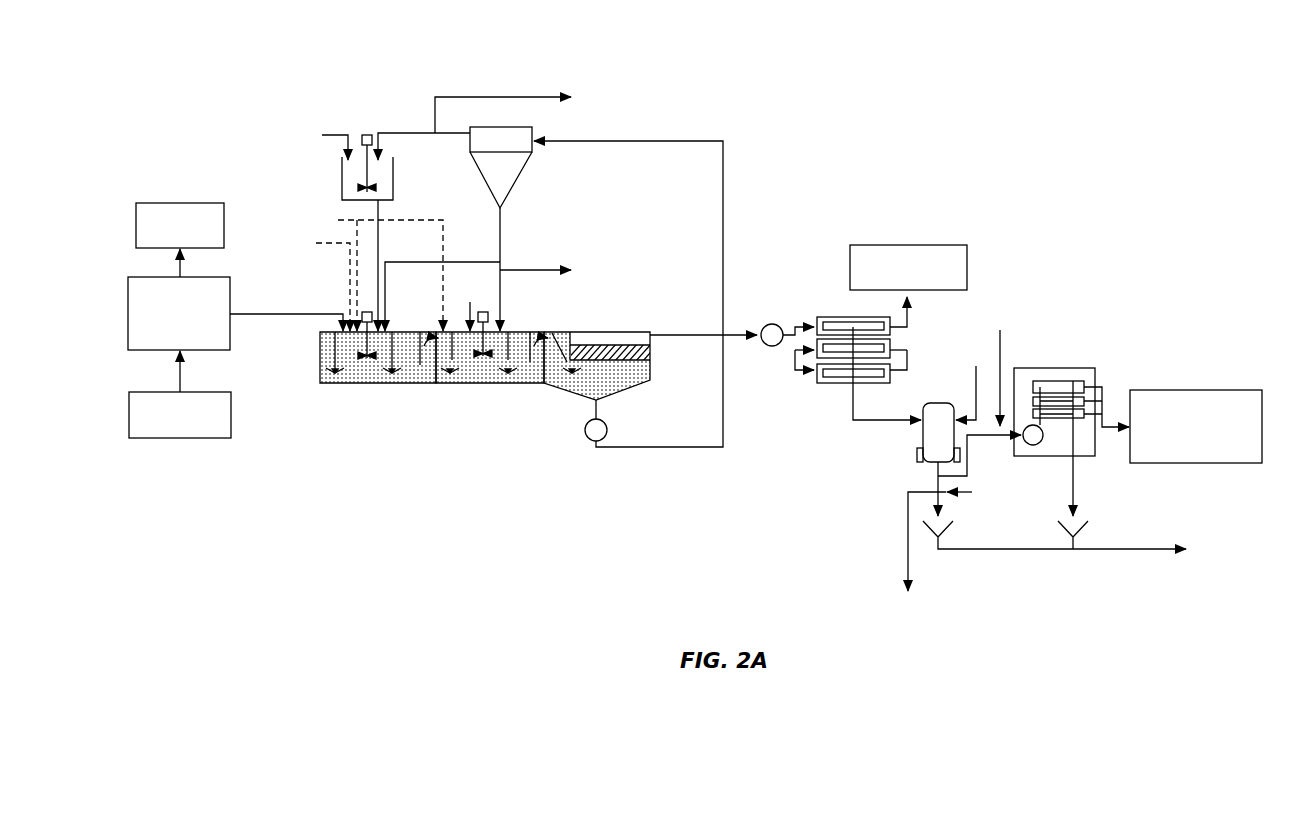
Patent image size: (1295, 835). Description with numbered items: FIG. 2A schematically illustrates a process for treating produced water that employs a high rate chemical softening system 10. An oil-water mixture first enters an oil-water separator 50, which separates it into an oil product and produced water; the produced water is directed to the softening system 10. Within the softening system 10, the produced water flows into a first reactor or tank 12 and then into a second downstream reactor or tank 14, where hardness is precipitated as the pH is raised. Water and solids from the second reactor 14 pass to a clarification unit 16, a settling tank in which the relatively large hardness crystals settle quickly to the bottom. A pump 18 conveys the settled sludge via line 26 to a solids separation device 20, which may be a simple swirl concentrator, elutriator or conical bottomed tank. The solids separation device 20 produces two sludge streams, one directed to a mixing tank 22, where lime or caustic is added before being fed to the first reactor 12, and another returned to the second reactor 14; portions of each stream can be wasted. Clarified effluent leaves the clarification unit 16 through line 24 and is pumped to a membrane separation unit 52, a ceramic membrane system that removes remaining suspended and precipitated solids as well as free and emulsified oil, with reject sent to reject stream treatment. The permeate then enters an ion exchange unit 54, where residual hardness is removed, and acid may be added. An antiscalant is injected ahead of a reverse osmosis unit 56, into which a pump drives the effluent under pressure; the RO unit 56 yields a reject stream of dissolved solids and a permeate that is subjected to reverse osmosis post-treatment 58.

The high rate chemical softening system 10 is at (404, 79).
The first reactor or tank 12 is at (345, 381).
The second downstream reactor or tank 14 is at (468, 376).
The clarification unit 16 is at (575, 386).
The pump 18 is at (585, 438).
The solids separation device 20 is at (520, 176).
The mixing tank 22 is at (395, 181).
The line 24 is at (668, 335).
The line 26 is at (725, 184).
The oil-water separator 50 is at (171, 344).
The membrane separation unit 52 is at (829, 296).
The ion exchange unit 54 is at (938, 402).
The reverse osmosis unit 56 is at (1075, 368).
The reverse osmosis post-treatment 58 is at (1188, 456).